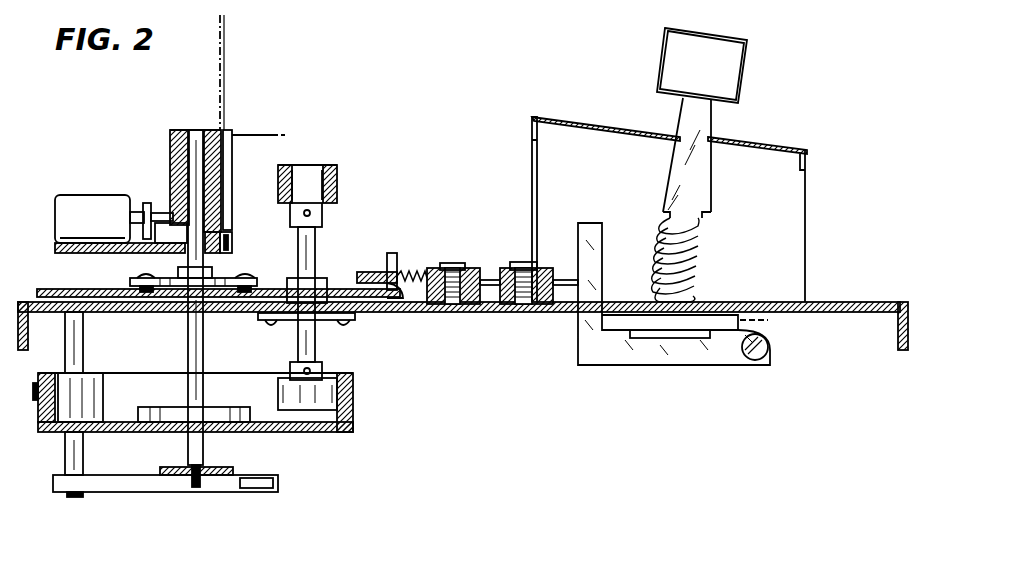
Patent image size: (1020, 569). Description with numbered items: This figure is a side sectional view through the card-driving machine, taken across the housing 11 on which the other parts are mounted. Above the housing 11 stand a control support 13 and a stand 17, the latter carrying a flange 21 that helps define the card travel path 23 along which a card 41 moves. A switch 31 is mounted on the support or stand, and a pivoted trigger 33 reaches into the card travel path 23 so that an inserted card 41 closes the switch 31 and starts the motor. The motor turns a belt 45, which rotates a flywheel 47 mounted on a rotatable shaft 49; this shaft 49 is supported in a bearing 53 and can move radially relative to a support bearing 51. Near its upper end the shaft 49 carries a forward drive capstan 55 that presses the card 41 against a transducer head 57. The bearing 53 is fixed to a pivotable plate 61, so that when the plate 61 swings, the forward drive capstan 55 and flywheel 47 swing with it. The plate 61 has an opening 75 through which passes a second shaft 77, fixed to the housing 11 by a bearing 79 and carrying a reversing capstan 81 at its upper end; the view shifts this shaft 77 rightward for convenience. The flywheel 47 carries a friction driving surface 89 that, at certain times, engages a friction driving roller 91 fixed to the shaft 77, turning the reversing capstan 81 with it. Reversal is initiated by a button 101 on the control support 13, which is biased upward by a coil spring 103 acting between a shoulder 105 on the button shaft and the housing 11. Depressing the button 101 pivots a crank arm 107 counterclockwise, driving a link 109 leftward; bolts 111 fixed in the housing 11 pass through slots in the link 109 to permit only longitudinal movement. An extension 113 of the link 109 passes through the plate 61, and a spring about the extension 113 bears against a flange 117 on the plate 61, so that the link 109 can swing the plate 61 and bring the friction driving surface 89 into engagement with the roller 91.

The housing 11 is at (845, 290).
The control support 13 is at (773, 133).
The stand 17 is at (62, 255).
The flange 21 is at (232, 238).
The card travel path 23 is at (220, 256).
The switch 31 is at (95, 197).
The trigger 33 is at (147, 203).
The card 41 is at (232, 78).
The belt 45 is at (33, 402).
The flywheel 47 is at (355, 392).
The rotatable shaft 49 is at (183, 332).
The support bearing 51 is at (166, 465).
The bearing 53 is at (110, 277).
The forward drive capstan 55 is at (170, 140).
The transducer head 57 is at (255, 140).
The plate 61 is at (52, 290).
The opening 75 is at (355, 290).
The shaft 77 is at (320, 345).
The bearing 79 is at (292, 330).
The reversing capstan 81 is at (337, 180).
The friction driving surface 89 is at (62, 405).
The friction driving roller 91 is at (280, 396).
The button 101 is at (740, 84).
The coil spring 103 is at (700, 256).
The shoulder 105 is at (705, 195).
The crank arm 107 is at (673, 365).
The link 109 is at (562, 280).
The bolts 111 is at (450, 266).
The extension 113 is at (360, 272).
The flange 117 is at (403, 300).